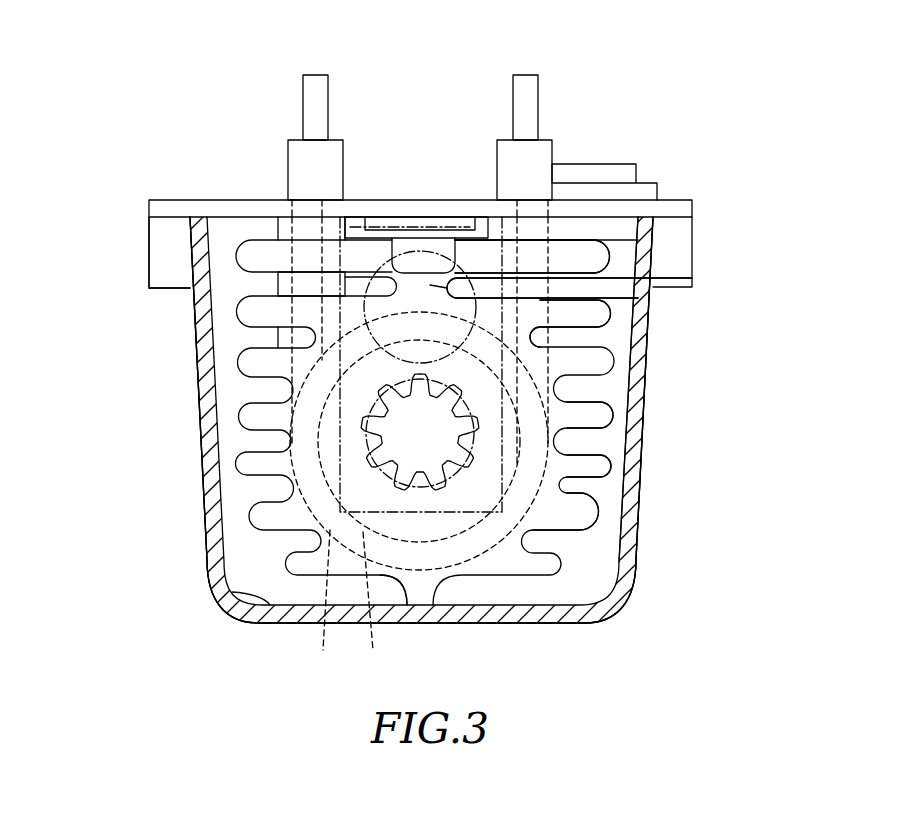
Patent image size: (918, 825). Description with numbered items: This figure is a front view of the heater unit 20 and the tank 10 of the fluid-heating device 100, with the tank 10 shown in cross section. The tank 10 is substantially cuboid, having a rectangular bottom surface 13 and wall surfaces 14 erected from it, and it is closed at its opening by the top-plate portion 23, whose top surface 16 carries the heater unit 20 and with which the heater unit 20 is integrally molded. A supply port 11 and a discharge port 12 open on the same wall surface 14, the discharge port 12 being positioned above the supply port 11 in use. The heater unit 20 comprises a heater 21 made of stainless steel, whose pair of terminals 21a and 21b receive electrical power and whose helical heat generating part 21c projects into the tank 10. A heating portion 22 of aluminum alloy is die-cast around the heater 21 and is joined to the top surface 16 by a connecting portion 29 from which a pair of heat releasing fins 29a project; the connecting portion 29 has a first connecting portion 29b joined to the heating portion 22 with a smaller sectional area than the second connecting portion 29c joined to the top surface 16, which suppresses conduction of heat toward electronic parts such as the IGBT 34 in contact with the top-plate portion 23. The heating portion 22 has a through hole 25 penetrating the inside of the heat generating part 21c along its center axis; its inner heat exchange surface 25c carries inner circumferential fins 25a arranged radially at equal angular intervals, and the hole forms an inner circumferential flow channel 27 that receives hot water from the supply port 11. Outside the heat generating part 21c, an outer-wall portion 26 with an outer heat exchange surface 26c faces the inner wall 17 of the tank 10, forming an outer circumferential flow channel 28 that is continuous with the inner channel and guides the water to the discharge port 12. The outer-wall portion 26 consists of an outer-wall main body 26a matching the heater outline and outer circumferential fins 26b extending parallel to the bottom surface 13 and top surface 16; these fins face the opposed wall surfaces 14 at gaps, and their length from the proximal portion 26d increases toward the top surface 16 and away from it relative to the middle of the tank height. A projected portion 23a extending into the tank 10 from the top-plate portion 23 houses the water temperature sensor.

The fluid-heating device 100 is at (639, 85).
The tank 10 is at (193, 360).
The supply port 11 is at (372, 423).
The discharge port 12 is at (375, 292).
The bottom surface 13 is at (232, 592).
The wall surfaces 14 is at (200, 508).
The top surface 16 is at (237, 217).
The inner wall 17 is at (708, 372).
The heater unit 20 is at (493, 217).
The heater 21 is at (320, 606).
The terminal 21a is at (525, 100).
The terminal 21b is at (318, 100).
The heat generating part 21c is at (372, 607).
The heating portion 22 is at (300, 578).
The top-plate portion 23 is at (375, 212).
The projected portion 23a is at (423, 248).
The through hole 25 is at (408, 485).
The inner circumferential fins 25a is at (460, 468).
The inner heat exchange surface 25c is at (462, 457).
The outer-wall portion 26 is at (712, 445).
The outer-wall main body 26a is at (545, 488).
The outer circumferential fins 26b is at (592, 466).
The outer heat exchange surface 26c is at (613, 420).
The proximal portion 26d is at (607, 345).
The inner circumferential flow channel 27 is at (420, 432).
The outer circumferential flow channel 28 is at (279, 282).
The connecting portion 29 is at (752, 218).
The heat releasing fins 29a is at (597, 258).
The first connecting portion 29b is at (692, 285).
The second connecting portion 29c is at (653, 221).
The IGBT 34 is at (590, 170).